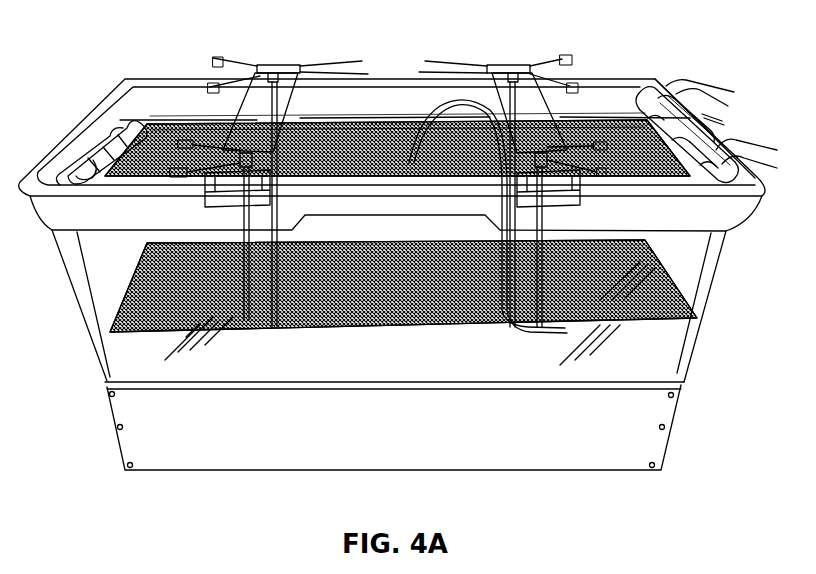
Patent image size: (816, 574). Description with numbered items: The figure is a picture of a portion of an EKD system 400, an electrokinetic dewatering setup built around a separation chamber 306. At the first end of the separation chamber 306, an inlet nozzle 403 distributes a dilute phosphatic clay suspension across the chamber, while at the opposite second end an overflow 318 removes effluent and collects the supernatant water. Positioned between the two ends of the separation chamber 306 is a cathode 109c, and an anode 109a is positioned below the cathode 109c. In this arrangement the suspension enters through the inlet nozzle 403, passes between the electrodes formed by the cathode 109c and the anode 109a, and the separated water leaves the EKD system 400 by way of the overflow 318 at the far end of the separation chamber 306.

The EKD system 400 is at (252, 31).
The overflow 318 is at (143, 123).
The cathode 109c is at (372, 122).
The anode 109a is at (289, 323).
The inlet nozzle 403 is at (641, 91).
The separation chamber 306 is at (694, 348).